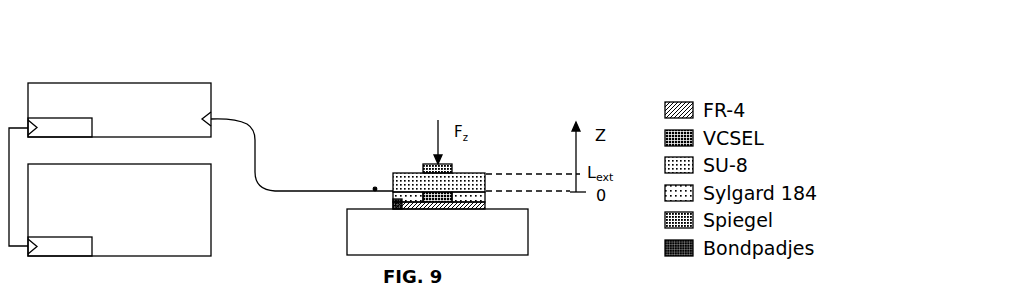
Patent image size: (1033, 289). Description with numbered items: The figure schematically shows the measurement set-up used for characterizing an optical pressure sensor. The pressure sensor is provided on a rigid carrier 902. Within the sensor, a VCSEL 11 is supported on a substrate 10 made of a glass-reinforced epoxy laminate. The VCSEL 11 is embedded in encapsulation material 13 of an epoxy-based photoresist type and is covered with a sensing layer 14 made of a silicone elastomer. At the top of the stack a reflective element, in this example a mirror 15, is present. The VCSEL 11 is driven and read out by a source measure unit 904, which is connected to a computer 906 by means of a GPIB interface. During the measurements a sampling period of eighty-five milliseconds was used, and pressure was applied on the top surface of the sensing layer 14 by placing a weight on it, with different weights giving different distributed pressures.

The substrate 10 is at (437, 178).
The VCSEL 11 is at (440, 190).
The encapsulation material 13 is at (393, 199).
The sensing layer 14 is at (393, 174).
The mirror 15 is at (428, 163).
The rigid carrier 902 is at (437, 232).
The source measure unit 904 is at (119, 110).
The computer 906 is at (119, 210).